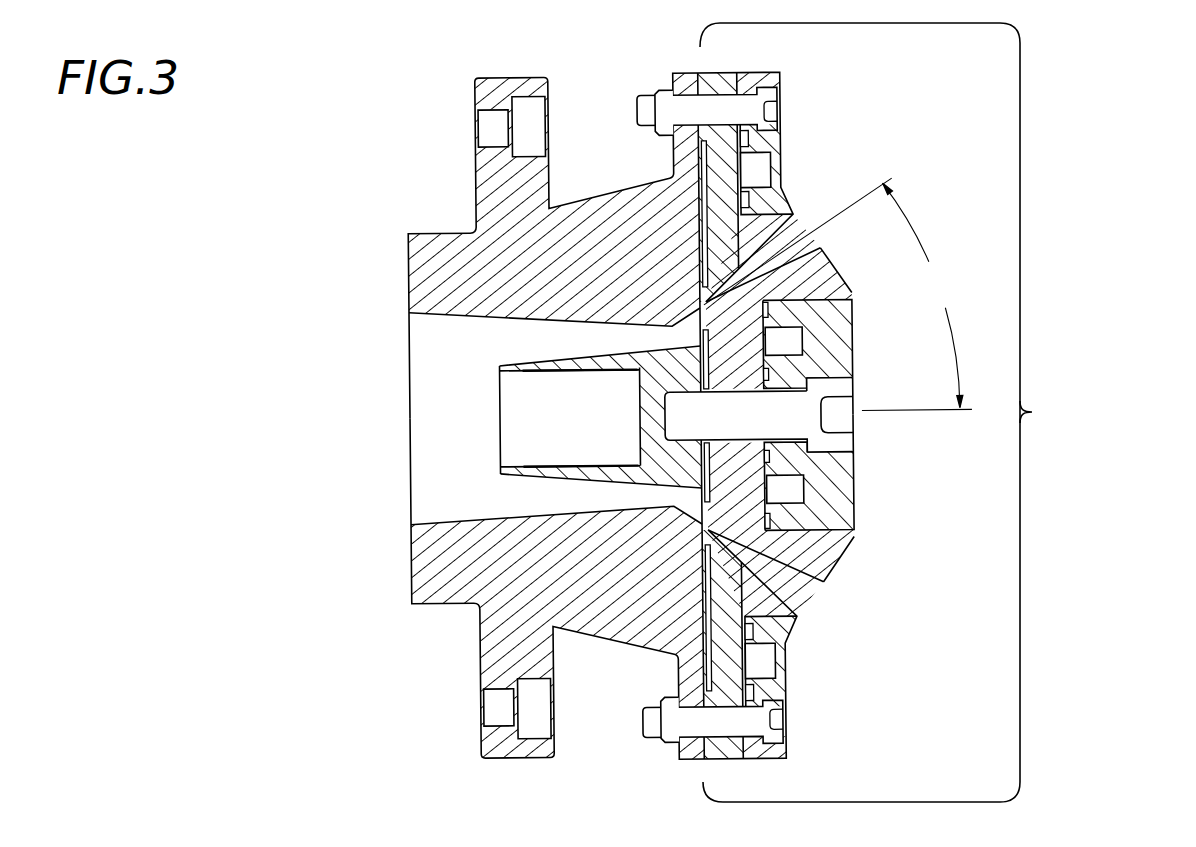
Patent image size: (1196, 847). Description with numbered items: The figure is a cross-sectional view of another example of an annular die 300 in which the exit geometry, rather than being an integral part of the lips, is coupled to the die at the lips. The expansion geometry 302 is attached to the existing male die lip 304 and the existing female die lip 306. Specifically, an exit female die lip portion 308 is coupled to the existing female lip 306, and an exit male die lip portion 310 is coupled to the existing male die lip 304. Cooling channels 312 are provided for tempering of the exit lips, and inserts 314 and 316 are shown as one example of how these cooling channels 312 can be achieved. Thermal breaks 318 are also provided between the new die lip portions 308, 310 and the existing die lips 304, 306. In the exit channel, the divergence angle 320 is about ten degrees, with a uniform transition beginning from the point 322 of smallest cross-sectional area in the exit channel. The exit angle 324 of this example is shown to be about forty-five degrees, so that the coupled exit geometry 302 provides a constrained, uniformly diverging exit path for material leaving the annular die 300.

The annular die 300 is at (1082, 97).
The expansion geometry 302 is at (892, 412).
The existing male die lip 304 is at (650, 450).
The existing female die lip 306 is at (453, 247).
The exit female die lip portion 308 is at (718, 75).
The exit male die lip portion 310 is at (825, 552).
The cooling channels 312 is at (752, 165).
The insert 314 is at (765, 83).
The insert 316 is at (835, 468).
The thermal breaks 318 is at (703, 217).
The divergence angle 320 is at (815, 238).
The point of smallest cross-sectional area 322 is at (700, 308).
The exit angle 324 is at (916, 296).